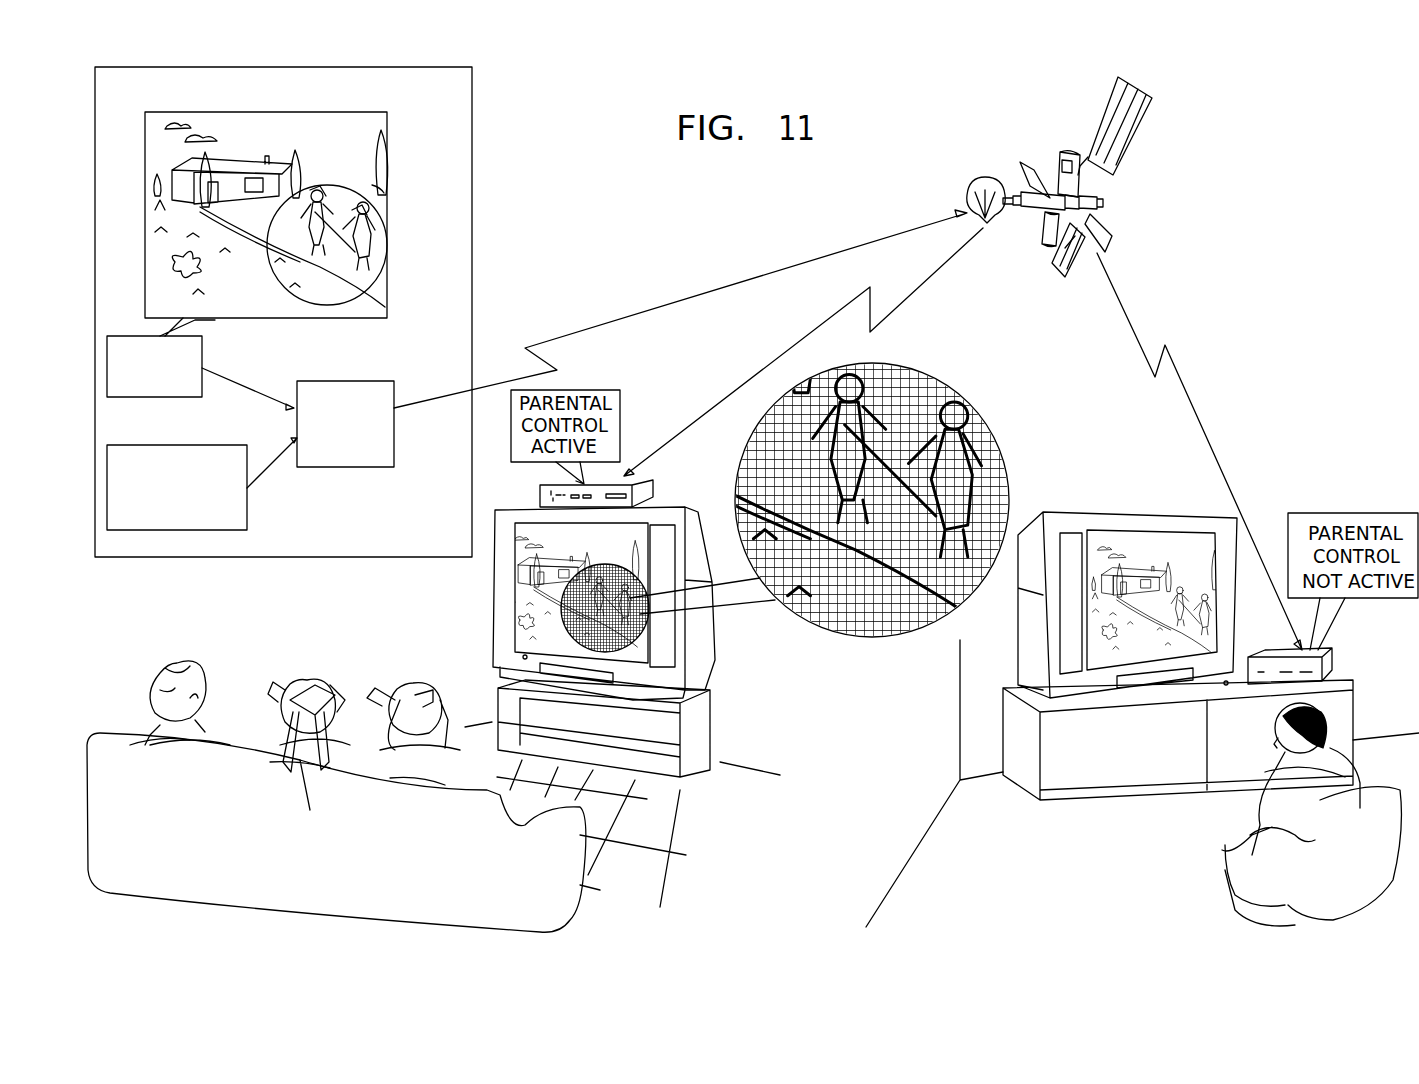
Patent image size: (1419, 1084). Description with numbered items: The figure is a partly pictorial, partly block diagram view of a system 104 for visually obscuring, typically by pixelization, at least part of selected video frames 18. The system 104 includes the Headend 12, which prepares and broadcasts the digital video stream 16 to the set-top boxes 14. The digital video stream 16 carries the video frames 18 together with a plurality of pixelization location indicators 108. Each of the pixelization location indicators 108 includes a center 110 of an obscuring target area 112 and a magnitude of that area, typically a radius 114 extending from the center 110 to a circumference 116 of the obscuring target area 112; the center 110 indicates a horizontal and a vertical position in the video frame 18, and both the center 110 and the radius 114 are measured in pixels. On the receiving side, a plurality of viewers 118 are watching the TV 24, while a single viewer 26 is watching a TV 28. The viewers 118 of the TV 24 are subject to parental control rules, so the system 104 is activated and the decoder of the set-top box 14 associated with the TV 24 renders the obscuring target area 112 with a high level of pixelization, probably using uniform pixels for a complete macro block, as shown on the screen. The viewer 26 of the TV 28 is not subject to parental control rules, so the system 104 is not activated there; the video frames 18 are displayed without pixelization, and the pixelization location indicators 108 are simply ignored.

The Headend 12 is at (472, 123).
The set-top boxes 14 is at (655, 491).
The digital video stream 16 is at (340, 381).
The video frames 18 is at (150, 397).
The TV 24 is at (495, 618).
The viewer 26 is at (1320, 715).
The TV 28 is at (1068, 525).
The system 104 is at (897, 207).
The pixelization location indicators 108 is at (247, 513).
The center 110 is at (308, 318).
The obscuring target area 112 is at (328, 191).
The radius 114 is at (371, 192).
The circumference 116 is at (345, 243).
The viewers 118 is at (410, 680).